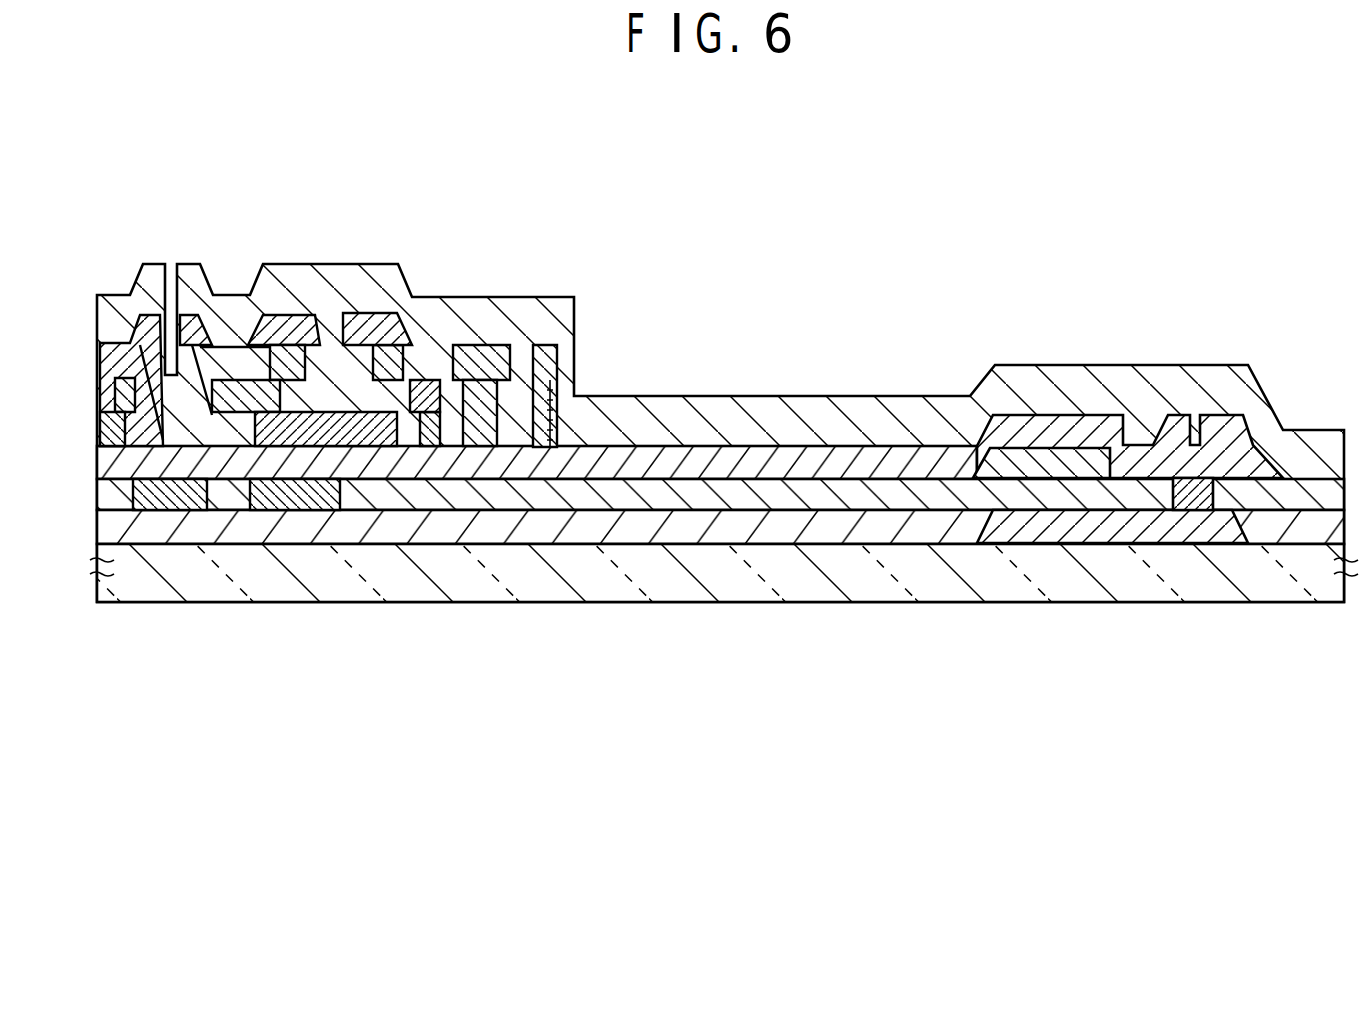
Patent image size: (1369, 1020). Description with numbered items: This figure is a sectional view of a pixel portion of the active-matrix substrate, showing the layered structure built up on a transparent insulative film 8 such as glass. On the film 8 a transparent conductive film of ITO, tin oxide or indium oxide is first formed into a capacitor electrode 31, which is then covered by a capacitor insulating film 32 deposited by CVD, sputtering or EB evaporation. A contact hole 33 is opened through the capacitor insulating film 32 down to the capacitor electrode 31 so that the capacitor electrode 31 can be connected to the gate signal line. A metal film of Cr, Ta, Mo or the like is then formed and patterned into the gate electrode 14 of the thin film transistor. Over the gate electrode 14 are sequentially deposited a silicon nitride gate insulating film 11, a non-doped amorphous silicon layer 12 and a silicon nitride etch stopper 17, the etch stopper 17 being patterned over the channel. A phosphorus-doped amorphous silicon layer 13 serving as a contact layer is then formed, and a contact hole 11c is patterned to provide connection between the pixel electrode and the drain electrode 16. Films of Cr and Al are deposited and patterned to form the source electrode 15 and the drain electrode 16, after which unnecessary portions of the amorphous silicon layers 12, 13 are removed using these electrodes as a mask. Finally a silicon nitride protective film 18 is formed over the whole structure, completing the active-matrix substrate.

The transparent insulative film 8 is at (787, 580).
The gate insulating film 11 is at (345, 462).
The contact hole 11c is at (505, 465).
The non-doped amorphous silicon layer 12 is at (385, 455).
The phosphorus-doped amorphous silicon layer 13 is at (240, 330).
The gate electrode 14 is at (317, 497).
The source electrode 15 is at (292, 322).
The drain electrode 16 is at (395, 325).
The etch stopper 17 is at (425, 340).
The protective film 18 is at (352, 282).
The capacitor electrode 31 is at (1098, 527).
The capacitor insulating film 32 is at (1050, 495).
The contact hole 33 is at (1205, 497).